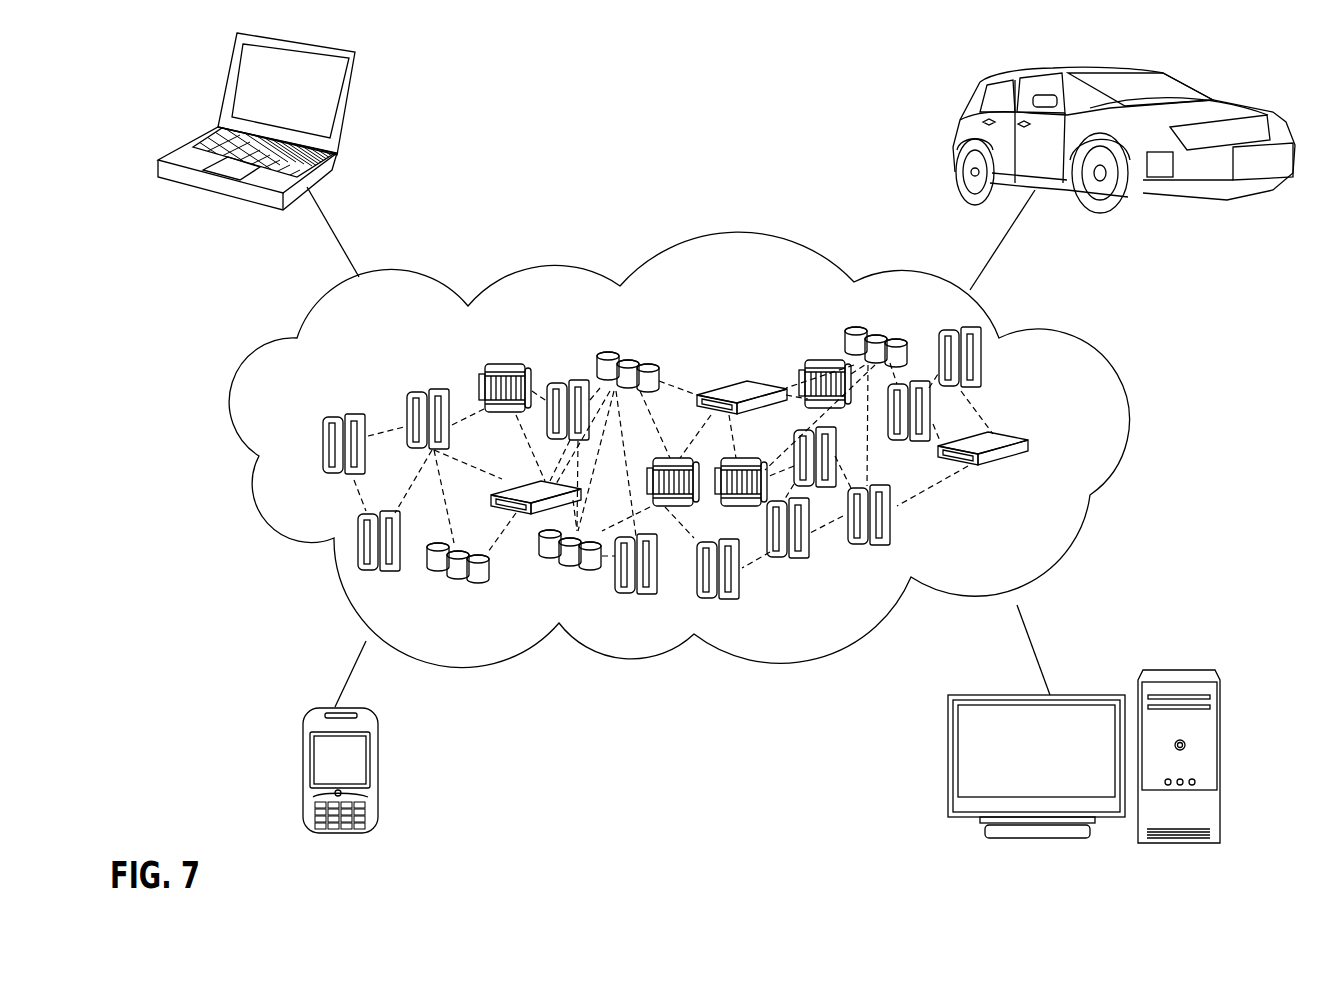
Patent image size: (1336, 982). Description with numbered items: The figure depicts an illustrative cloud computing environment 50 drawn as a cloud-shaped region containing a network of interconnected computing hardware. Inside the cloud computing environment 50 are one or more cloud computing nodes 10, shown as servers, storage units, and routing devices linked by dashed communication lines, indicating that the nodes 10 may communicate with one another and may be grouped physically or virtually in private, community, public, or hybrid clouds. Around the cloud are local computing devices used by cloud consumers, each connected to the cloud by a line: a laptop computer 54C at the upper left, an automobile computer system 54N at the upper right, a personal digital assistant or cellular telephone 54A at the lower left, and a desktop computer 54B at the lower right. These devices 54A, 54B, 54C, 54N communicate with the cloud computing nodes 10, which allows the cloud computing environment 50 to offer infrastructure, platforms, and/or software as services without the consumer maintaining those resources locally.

The cloud computing nodes 10 is at (1074, 465).
The cloud computing environment 50 is at (1095, 353).
The personal digital assistant (PDA) or cellular telephone 54A is at (302, 775).
The desktop computer 54B is at (1182, 667).
The laptop computer 54C is at (345, 108).
The automobile computer system 54N is at (962, 122).